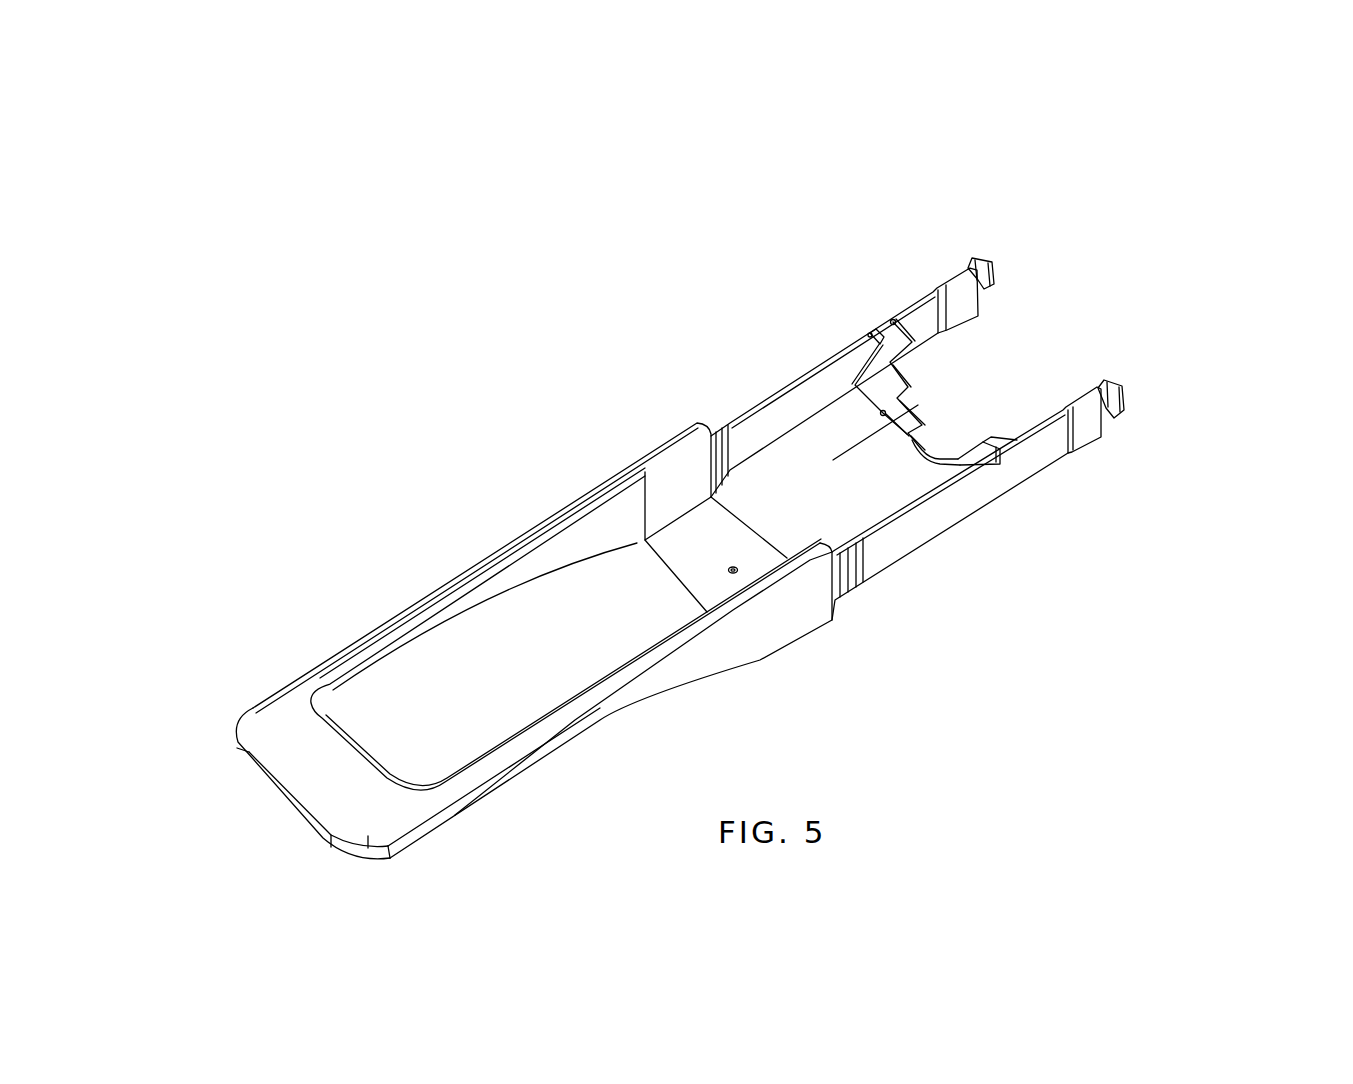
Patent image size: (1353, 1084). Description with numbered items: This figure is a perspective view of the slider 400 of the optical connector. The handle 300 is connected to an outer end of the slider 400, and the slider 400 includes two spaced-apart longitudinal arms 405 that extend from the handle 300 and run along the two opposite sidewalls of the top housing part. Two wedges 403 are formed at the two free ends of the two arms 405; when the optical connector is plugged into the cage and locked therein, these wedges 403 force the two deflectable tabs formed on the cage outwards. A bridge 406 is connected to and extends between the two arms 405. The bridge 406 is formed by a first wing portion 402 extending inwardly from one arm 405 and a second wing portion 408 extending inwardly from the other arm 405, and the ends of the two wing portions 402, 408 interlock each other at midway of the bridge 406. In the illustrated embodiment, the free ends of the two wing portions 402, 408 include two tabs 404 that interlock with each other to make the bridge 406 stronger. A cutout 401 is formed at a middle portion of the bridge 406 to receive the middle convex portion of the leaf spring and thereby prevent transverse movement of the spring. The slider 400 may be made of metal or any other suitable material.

The handle 300 is at (317, 762).
The slider 400 is at (1080, 352).
The cutout 401 is at (833, 460).
The first wing portion 402 is at (877, 377).
The wedge 403 is at (987, 268).
The tab 404 is at (855, 385).
The longitudinal arm 405 is at (917, 300).
The bridge 406 is at (922, 456).
The second wing portion 408 is at (947, 442).